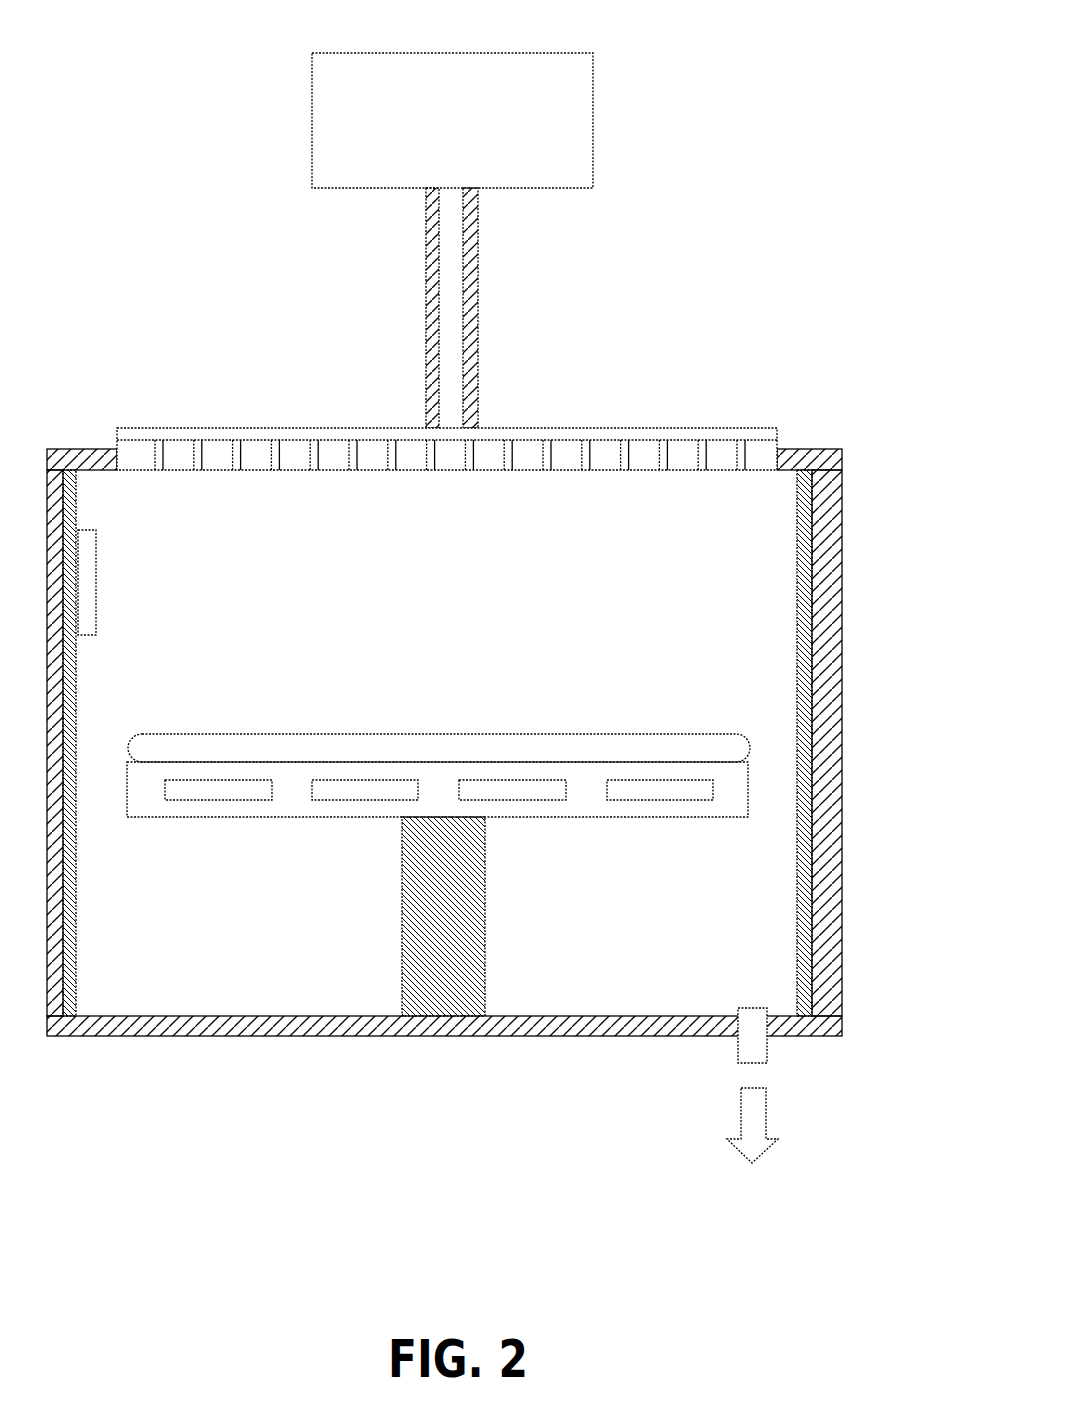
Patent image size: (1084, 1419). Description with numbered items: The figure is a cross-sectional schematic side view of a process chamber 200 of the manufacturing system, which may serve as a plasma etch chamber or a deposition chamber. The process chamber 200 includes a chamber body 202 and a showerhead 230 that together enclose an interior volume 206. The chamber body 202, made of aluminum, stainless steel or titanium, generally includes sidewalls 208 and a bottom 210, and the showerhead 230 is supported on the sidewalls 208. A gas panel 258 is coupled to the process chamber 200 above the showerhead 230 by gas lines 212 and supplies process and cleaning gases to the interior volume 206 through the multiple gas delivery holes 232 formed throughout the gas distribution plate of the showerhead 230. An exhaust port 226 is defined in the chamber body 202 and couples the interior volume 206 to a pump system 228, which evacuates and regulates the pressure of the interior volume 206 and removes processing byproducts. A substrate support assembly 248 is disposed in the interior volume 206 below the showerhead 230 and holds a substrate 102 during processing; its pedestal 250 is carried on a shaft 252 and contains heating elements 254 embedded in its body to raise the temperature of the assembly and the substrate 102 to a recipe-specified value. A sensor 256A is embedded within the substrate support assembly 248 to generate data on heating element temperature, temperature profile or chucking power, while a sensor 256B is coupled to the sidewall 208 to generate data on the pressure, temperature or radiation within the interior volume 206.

The process chamber 200 is at (826, 72).
The gas panel 258 is at (593, 125).
The gas conduits 212 is at (480, 283).
The chamber body 202 is at (504, 784).
The sidewalls 208 is at (841, 698).
The bottom 210 is at (163, 1037).
The interior volume 206 is at (735, 505).
The gas delivery holes 232 is at (447, 470).
The showerhead 230 is at (500, 470).
The sensor 256B is at (96, 606).
The substrate support pedestal 250 is at (437, 827).
The heating elements 254 is at (345, 800).
The sensor 256A is at (693, 800).
The substrate 102 is at (348, 733).
The pedestal shaft 252 is at (485, 905).
The substrate support assembly 248 is at (322, 952).
The exhaust port 226 is at (733, 1045).
The pump system 228 is at (752, 1145).